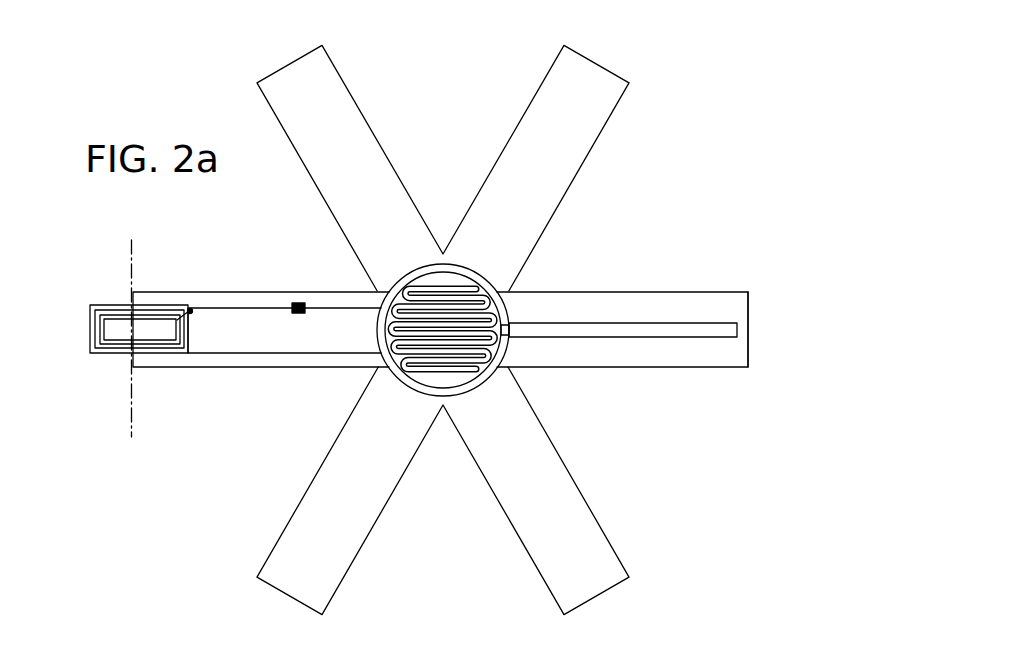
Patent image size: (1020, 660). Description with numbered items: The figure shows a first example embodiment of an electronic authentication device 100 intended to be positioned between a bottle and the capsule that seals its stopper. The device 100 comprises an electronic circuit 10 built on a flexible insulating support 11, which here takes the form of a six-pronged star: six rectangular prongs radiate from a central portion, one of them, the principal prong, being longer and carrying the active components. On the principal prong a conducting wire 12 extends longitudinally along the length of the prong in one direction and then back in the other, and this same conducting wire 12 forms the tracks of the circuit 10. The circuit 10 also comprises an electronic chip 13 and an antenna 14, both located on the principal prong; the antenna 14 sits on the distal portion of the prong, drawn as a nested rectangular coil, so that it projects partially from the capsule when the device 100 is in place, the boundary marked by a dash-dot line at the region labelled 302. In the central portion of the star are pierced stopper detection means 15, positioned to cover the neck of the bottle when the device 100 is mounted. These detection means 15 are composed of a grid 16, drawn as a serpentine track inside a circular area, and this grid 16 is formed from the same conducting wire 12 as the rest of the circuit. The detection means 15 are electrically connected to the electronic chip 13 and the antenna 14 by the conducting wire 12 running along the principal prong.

The electronic authentication device 100 is at (698, 84).
The electronic circuit 10 is at (766, 294).
The flexible insulating support 11 is at (723, 353).
The conducting wire 12 is at (235, 307).
The electronic chip 13 is at (289, 291).
The antenna 14 is at (110, 292).
The pierced stopper detection means 15 is at (417, 252).
The grid 16 is at (433, 352).
The fold line 302 is at (118, 428).